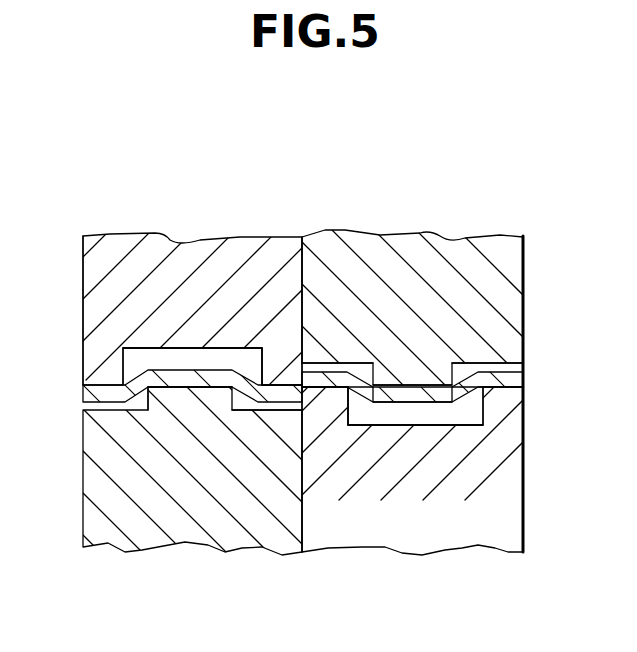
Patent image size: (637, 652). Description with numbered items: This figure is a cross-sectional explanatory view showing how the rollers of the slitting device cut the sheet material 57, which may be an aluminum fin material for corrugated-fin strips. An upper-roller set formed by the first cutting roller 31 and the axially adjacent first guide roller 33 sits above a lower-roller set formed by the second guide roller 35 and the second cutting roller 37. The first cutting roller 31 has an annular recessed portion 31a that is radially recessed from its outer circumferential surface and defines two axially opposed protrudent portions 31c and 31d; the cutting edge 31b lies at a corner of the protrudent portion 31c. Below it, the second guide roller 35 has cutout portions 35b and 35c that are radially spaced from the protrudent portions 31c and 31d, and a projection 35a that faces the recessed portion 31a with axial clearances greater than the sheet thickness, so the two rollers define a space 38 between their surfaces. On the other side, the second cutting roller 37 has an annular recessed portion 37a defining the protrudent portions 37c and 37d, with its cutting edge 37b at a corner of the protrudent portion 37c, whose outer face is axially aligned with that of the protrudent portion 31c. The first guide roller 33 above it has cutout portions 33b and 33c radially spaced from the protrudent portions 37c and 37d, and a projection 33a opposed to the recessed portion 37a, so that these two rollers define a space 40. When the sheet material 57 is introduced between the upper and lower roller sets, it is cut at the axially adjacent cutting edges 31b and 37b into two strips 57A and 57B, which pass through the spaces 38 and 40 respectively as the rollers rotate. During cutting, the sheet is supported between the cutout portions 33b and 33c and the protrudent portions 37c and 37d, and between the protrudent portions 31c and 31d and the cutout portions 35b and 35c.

The first cutting roller 31 is at (185, 252).
The annular recessed portion 31a is at (150, 352).
The cutting edge 31b is at (299, 378).
The protrudent portion 31c is at (266, 355).
The protrudent portion 31d is at (103, 368).
The space 38 is at (187, 360).
The first guide roller 33 is at (413, 255).
The projection 33a is at (422, 377).
The cutout portion 33b is at (362, 363).
The cutout portion 33c is at (466, 365).
The second guide roller 35 is at (202, 527).
The projection 35a is at (186, 392).
The cutout portion 35b is at (249, 403).
The cutout portion 35c is at (138, 403).
The second cutting roller 37 is at (397, 525).
The annular recessed portion 37a is at (418, 420).
The cutting edge 37b is at (331, 371).
The protrudent portion 37c is at (330, 410).
The protrudent portion 37d is at (503, 402).
The space 40 is at (395, 413).
The sheet material 57 is at (318, 461).
The strip 57A is at (92, 394).
The strip 57B is at (525, 382).